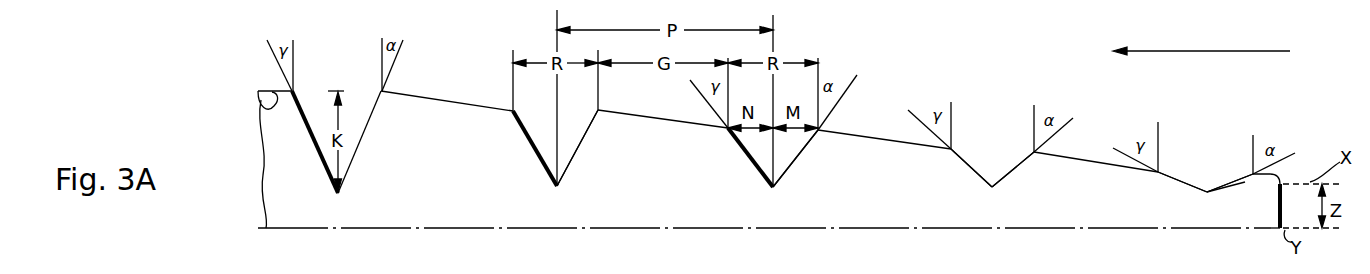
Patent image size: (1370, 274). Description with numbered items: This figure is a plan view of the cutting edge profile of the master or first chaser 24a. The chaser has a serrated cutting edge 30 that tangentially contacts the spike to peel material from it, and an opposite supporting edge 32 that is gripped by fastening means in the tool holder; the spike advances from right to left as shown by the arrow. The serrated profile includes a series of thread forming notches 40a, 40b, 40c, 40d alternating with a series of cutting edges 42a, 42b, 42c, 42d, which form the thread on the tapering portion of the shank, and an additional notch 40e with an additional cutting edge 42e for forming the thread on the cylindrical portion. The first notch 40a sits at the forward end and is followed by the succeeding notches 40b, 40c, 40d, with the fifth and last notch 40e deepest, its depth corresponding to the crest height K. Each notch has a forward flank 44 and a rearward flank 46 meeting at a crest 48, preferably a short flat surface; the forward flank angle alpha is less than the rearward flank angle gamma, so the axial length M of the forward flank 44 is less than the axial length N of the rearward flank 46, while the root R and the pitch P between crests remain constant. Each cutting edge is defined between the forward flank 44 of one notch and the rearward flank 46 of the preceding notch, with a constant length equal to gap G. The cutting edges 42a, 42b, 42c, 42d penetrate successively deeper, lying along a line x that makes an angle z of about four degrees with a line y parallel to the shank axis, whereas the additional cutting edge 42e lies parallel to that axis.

The first chaser 24a is at (1103, 219).
The serrated cutting edge 30 is at (1284, 180).
The supporting edge 32 is at (769, 246).
The first notch 40a is at (1205, 194).
The second notch 40b is at (992, 180).
The third notch 40c is at (773, 171).
The fourth notch 40d is at (555, 163).
The additional notch 40e is at (336, 156).
The cutting edge 42a is at (1096, 168).
The cutting edge 42b is at (884, 147).
The cutting edge 42c is at (663, 128).
The cutting edge 42d is at (447, 115).
The additional cutting edge 42e is at (262, 117).
The forward flank 44 is at (585, 134).
The rearward flank 46 is at (530, 142).
The crest 48 is at (1000, 189).